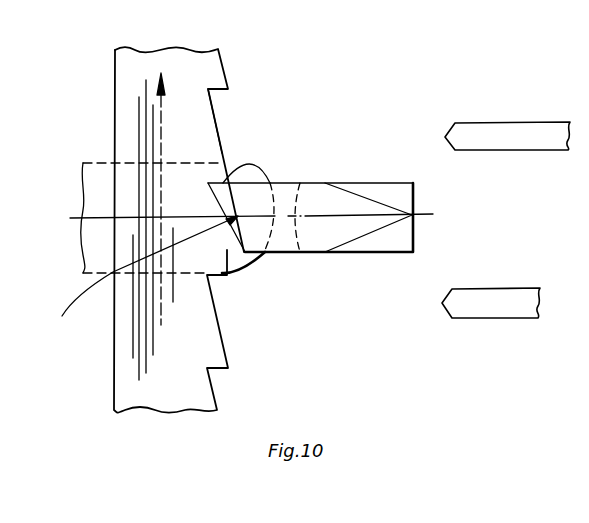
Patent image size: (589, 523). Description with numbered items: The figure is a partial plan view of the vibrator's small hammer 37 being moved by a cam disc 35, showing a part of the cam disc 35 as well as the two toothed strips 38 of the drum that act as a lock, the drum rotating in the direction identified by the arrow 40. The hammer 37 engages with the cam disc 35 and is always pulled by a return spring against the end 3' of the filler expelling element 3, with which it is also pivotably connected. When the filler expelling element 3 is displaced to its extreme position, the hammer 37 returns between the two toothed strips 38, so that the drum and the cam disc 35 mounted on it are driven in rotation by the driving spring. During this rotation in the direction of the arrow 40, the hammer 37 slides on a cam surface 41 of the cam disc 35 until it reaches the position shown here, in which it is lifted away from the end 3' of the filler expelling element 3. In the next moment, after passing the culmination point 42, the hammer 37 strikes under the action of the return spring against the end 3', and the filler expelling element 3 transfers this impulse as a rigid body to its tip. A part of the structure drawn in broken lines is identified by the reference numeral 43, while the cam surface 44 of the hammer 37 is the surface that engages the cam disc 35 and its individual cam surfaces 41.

The cam disc 35 is at (130, 72).
The filler expelling element 3 is at (127, 203).
The end of the filler expelling element 3' is at (248, 281).
The arrow 40 is at (158, 110).
The cam surface 41 is at (220, 145).
The culmination point 42 is at (248, 168).
The broken lines 43 is at (296, 229).
The hammer 37 is at (352, 222).
The toothed strips 38 is at (490, 292).
The cam surface of the hammer 44 is at (233, 274).